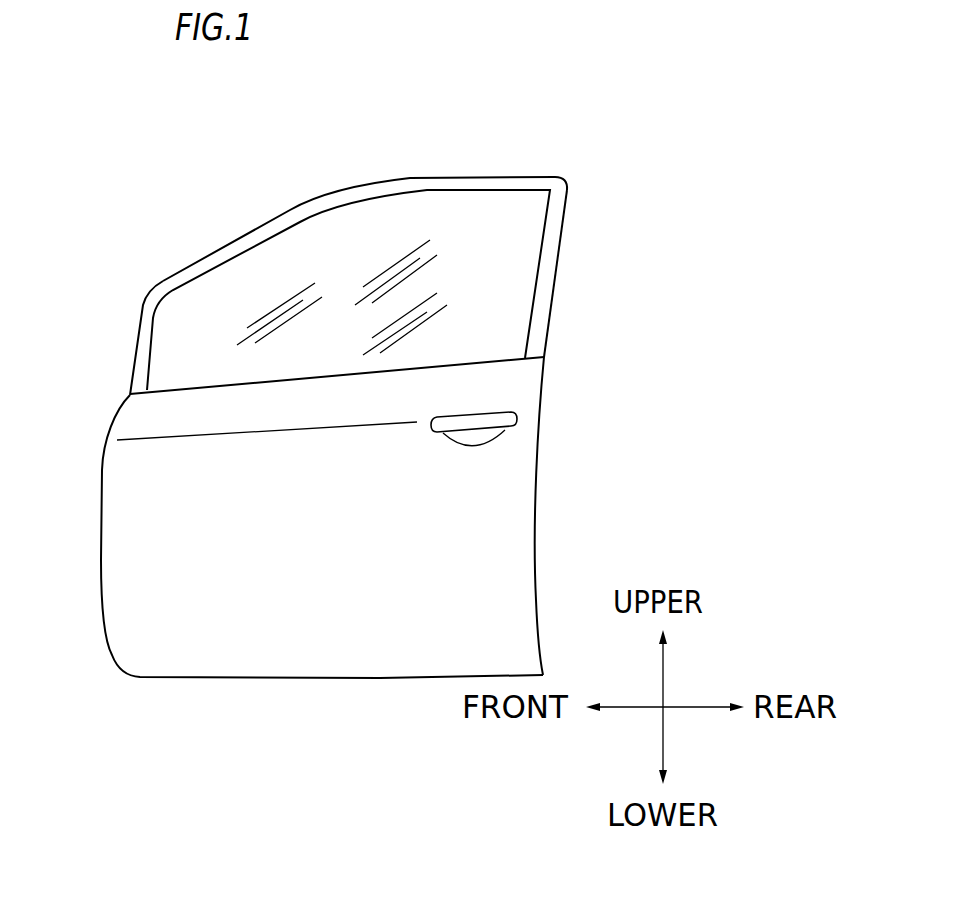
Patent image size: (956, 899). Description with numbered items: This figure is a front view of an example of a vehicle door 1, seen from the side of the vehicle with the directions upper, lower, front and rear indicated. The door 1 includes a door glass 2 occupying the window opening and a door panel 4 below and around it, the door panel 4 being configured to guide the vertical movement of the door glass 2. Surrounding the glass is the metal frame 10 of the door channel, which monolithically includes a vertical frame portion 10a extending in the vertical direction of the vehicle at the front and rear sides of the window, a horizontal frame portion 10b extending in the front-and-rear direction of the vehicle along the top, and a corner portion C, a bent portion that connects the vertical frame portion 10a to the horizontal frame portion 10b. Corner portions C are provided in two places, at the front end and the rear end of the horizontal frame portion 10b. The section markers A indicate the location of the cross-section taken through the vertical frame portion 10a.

The vehicle door 1 is at (217, 245).
The door glass 2 is at (473, 215).
The door panel 4 is at (324, 184).
The metal frame 10 is at (411, 170).
The vertical frame portion 10a is at (143, 338).
The horizontal frame portion 10b is at (538, 180).
The corner portion C is at (149, 251).
The section line A- A is at (485, 303).